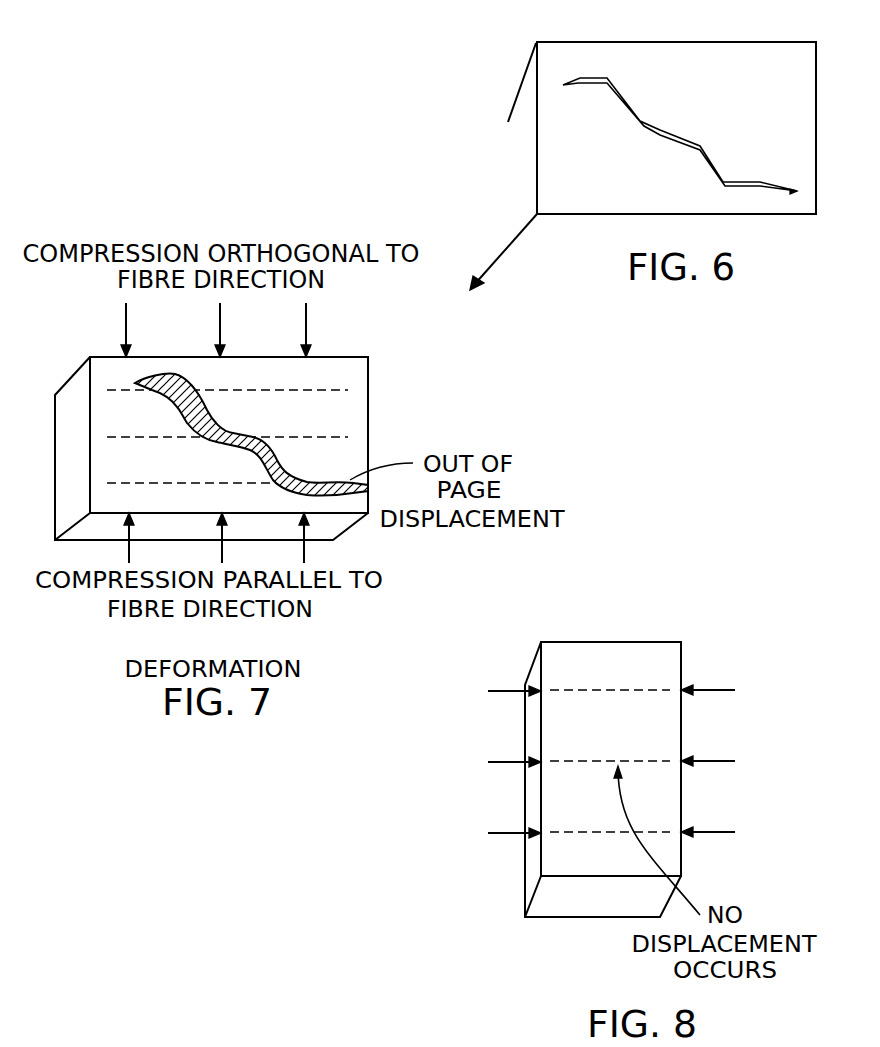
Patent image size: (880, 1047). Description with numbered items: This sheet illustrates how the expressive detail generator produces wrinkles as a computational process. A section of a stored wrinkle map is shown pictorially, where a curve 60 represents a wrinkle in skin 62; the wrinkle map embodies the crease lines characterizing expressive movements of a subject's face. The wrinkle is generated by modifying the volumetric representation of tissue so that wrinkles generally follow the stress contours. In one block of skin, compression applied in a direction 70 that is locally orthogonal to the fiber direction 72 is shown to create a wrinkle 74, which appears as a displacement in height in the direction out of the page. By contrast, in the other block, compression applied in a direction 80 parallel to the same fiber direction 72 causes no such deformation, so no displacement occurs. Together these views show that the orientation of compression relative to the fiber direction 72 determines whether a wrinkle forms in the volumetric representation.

In FIG. 6, the curve 60 is at (660, 133).
In FIG. 6, the skin 62 is at (743, 129).
In FIG. 7, the direction 70 is at (310, 317).
In FIG. 7, the fiber direction 72 is at (340, 389).
In FIG. 8, the fiber direction 72 is at (660, 688).
In FIG. 7, the wrinkle 74 is at (178, 405).
In FIG. 8, the direction 80 is at (717, 758).